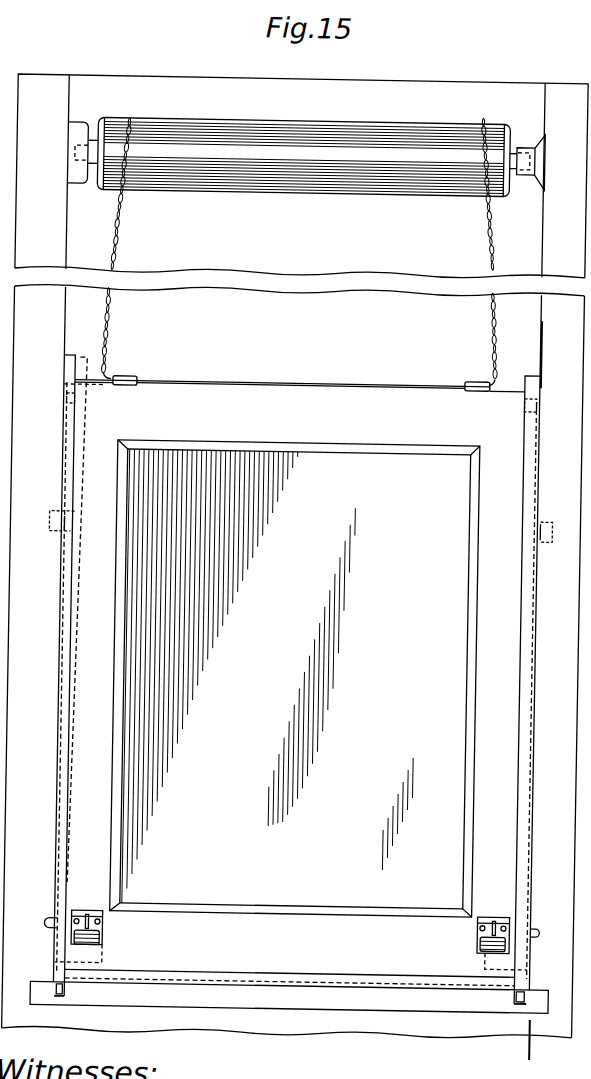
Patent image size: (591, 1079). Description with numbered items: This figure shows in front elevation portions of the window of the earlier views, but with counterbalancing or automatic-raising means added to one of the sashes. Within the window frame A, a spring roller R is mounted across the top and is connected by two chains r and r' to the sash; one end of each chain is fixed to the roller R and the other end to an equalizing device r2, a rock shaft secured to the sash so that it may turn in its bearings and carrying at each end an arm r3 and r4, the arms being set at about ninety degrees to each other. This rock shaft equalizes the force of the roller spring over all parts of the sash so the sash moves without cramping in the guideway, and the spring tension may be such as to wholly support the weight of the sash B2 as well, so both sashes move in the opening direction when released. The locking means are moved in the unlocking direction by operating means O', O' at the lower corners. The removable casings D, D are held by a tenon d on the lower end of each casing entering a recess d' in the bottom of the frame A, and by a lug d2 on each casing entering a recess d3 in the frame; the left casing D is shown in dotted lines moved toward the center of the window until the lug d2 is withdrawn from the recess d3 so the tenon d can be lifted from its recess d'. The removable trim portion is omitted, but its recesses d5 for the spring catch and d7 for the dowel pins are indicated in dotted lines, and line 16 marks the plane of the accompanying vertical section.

The window frame A is at (295, 557).
The spring roller R is at (303, 156).
The chain r is at (117, 248).
The chain r' is at (497, 252).
The equalizing device r2 is at (296, 383).
The arm r3 is at (109, 377).
The arm r4 is at (491, 383).
The casing D is at (66, 773).
The tenon d is at (280, 1008).
The recess d' is at (290, 1016).
The lug d2 is at (67, 532).
The recess d3 is at (46, 511).
The recess d5 is at (539, 401).
The recess d7 is at (62, 406).
The sash B2 is at (294, 683).
The operating means O' is at (292, 940).
The section line 16 is at (547, 693).